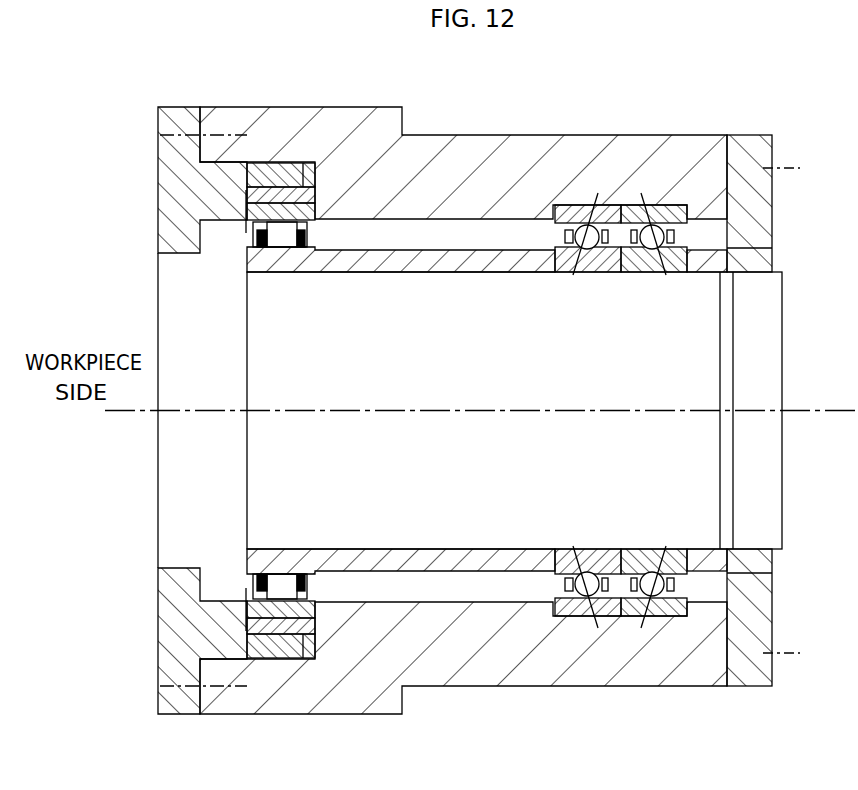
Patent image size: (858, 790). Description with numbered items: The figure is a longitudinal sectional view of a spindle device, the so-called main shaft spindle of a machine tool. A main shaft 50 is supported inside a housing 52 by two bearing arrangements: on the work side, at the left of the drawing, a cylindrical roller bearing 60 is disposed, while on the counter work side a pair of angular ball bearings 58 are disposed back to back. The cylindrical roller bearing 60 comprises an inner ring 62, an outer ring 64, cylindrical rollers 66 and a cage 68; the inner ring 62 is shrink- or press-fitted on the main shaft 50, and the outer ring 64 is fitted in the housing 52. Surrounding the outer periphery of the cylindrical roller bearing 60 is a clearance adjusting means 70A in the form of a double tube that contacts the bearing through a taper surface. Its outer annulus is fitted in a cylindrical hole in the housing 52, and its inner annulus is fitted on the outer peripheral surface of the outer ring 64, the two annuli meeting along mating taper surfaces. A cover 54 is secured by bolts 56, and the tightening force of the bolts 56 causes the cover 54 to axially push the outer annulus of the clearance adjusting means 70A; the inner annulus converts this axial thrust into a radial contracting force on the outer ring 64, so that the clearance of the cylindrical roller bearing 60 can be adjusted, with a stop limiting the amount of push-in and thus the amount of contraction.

The main shaft 50 is at (703, 347).
The housing 52 is at (483, 690).
The cover 54 is at (168, 705).
The bolts 56 is at (218, 688).
The angular ball bearings 58 is at (649, 182).
The cylindrical roller bearing 60 is at (98, 517).
The inner ring 62 is at (247, 560).
The outer ring 64 is at (257, 607).
The cylindrical rollers 66 is at (257, 590).
The cage 68 is at (257, 583).
The clearance adjusting means 70A is at (296, 668).